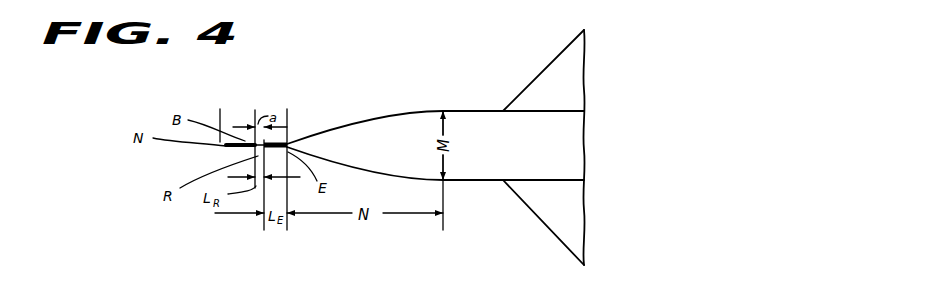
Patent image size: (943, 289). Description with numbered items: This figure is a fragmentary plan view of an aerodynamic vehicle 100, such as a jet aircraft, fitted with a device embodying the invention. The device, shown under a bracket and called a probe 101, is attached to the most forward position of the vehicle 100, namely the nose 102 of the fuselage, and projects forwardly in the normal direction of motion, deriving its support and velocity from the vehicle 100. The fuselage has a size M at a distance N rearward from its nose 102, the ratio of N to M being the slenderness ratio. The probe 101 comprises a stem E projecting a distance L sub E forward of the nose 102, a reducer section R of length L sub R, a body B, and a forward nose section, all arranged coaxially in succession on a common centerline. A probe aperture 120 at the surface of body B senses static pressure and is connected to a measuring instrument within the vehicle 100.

The aerodynamic vehicle 100 is at (572, 128).
The probe 101 is at (207, 131).
The nose 102 is at (317, 138).
The probe aperture 120 is at (255, 151).